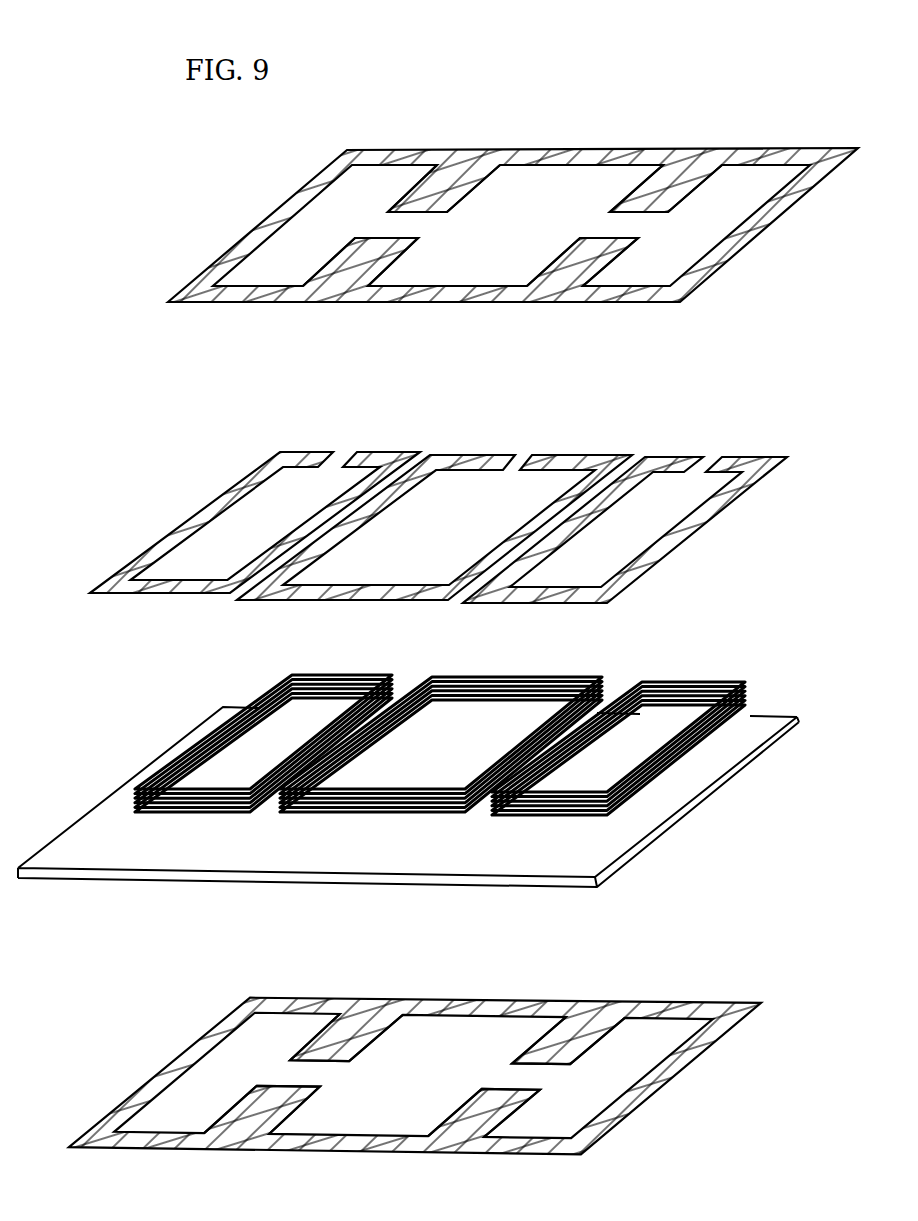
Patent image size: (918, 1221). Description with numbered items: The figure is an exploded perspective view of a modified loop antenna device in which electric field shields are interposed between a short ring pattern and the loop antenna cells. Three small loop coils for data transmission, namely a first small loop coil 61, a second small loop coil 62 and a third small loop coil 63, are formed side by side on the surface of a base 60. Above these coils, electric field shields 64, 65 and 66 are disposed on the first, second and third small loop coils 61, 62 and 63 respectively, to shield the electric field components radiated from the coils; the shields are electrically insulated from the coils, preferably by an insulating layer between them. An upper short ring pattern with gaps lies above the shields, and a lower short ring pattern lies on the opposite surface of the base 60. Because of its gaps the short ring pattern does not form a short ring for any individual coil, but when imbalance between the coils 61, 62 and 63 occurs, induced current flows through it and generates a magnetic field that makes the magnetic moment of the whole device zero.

The base 60 is at (700, 796).
The first small loop coil 61 is at (374, 813).
The second small loop coil 62 is at (195, 812).
The third small loop coil 63 is at (549, 817).
The electric field shield 64 is at (478, 455).
The electric field shield 65 is at (302, 452).
The electric field shield 66 is at (687, 463).